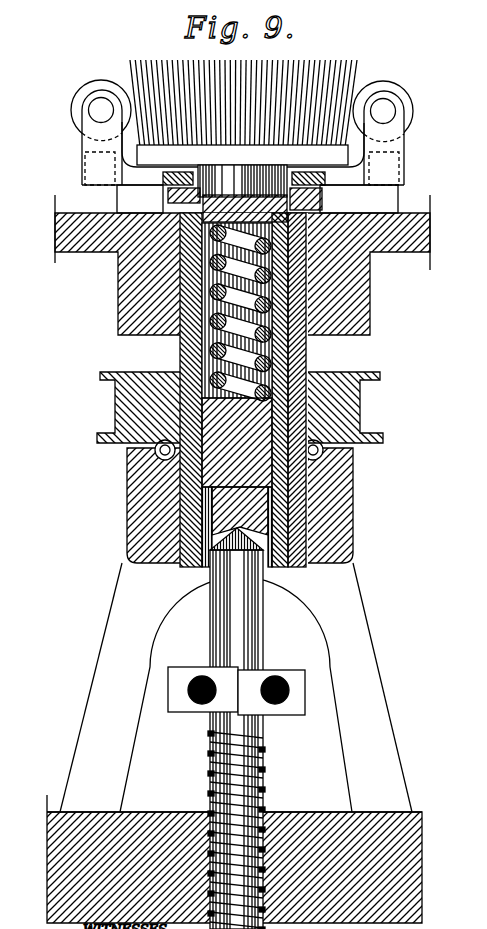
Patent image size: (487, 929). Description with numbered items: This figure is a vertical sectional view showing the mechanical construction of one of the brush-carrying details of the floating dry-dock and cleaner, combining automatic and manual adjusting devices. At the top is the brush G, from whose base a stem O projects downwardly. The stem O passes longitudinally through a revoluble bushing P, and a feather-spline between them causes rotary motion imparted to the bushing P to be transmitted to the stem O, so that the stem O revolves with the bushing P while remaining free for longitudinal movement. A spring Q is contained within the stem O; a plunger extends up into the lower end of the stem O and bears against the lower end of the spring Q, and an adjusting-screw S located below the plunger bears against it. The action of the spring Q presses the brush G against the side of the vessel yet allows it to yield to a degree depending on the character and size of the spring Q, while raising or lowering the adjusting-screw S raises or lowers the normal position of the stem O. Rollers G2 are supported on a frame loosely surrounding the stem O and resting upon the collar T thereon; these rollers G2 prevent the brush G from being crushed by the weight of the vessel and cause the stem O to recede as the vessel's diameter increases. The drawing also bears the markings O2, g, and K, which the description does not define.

The brush G is at (343, 68).
The rollers G2 is at (101, 80).
The sleeve blocks O2 is at (198, 212).
The collar T is at (324, 201).
The stem O is at (278, 300).
The spring Q is at (197, 350).
The revoluble bushing P is at (304, 355).
The pulley collar g is at (115, 407).
The plug K is at (237, 466).
The adjusting-screw S is at (262, 654).